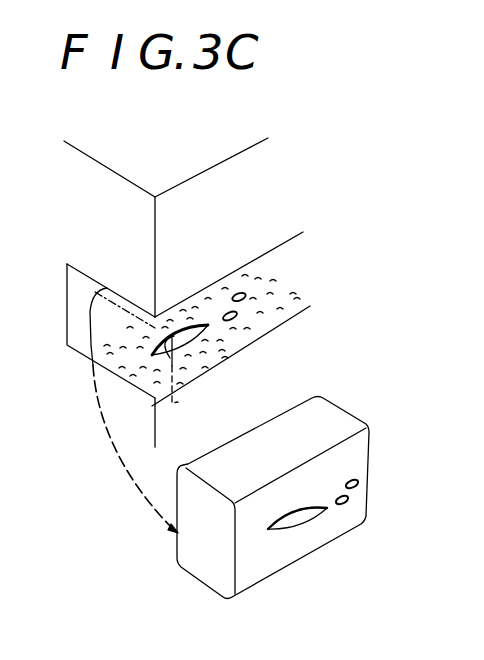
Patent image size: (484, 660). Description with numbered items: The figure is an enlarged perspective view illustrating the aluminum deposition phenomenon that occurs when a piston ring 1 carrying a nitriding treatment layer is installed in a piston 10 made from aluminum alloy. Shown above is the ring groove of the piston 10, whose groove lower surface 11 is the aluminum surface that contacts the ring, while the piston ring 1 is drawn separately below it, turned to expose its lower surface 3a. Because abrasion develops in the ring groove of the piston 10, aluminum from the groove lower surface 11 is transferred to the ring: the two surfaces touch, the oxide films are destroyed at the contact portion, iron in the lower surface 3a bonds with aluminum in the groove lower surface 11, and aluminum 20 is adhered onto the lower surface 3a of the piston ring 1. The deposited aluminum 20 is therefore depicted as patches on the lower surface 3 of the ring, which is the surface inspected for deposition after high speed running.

The piston ring 1 is at (78, 309).
The lower surface of the piston ring 3 is at (160, 402).
The lower surface of the piston ring 3a is at (273, 562).
The piston 10 is at (266, 206).
The groove lower surface 11 is at (82, 346).
The deposited aluminum 20 is at (305, 520).